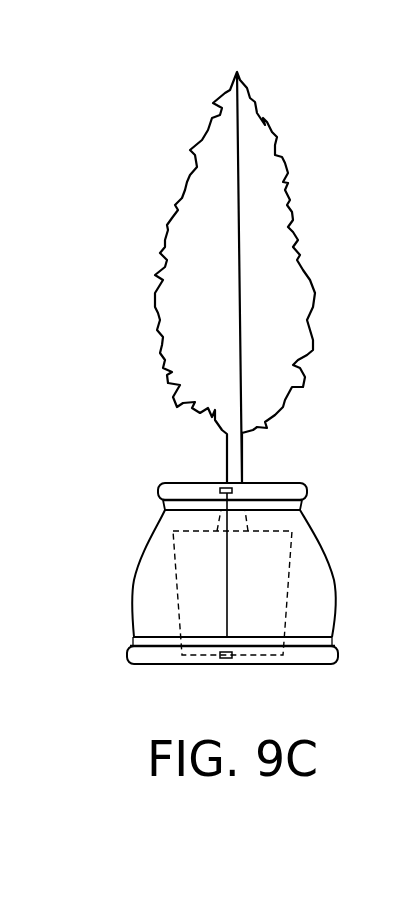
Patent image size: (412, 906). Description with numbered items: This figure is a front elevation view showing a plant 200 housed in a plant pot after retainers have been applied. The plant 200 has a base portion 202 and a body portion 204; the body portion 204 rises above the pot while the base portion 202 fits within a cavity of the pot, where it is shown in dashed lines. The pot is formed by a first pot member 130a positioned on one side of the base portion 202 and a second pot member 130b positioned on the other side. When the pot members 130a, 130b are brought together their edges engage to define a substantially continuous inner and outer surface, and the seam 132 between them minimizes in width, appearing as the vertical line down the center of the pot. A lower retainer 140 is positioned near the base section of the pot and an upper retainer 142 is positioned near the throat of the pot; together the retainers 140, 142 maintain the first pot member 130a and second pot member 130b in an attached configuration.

The plant 200 is at (334, 102).
The body portion 204 is at (282, 207).
The base portion 202 is at (272, 531).
The upper retainer 142 is at (309, 501).
The lower retainer 140 is at (323, 641).
The first pot member 130a is at (145, 556).
The second pot member 130b is at (324, 552).
The seam 132 is at (226, 624).